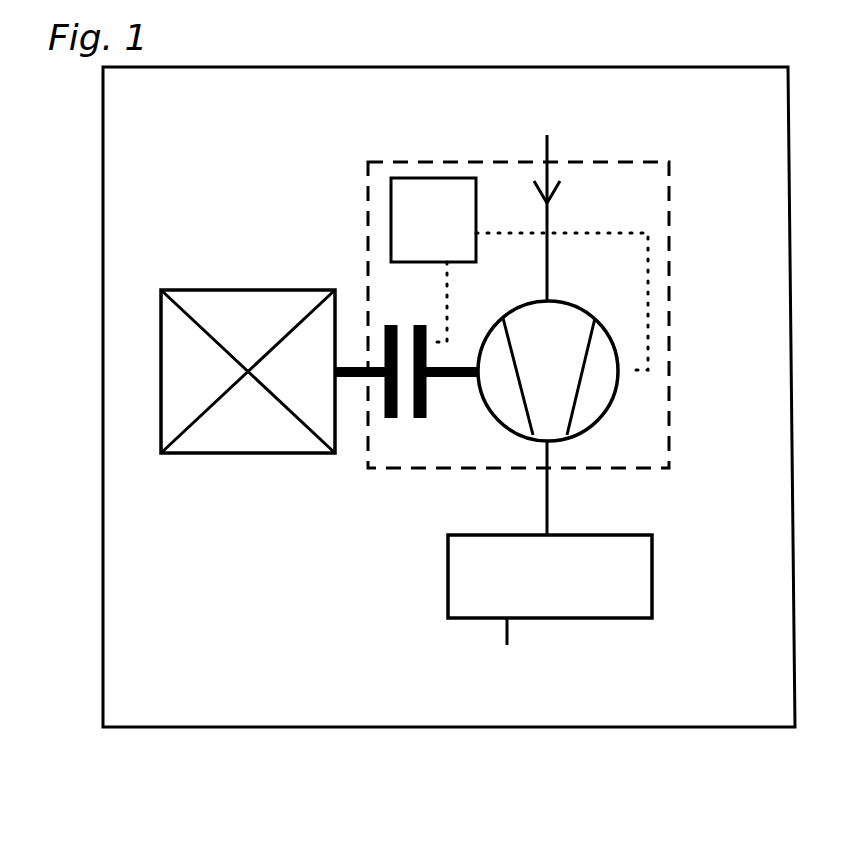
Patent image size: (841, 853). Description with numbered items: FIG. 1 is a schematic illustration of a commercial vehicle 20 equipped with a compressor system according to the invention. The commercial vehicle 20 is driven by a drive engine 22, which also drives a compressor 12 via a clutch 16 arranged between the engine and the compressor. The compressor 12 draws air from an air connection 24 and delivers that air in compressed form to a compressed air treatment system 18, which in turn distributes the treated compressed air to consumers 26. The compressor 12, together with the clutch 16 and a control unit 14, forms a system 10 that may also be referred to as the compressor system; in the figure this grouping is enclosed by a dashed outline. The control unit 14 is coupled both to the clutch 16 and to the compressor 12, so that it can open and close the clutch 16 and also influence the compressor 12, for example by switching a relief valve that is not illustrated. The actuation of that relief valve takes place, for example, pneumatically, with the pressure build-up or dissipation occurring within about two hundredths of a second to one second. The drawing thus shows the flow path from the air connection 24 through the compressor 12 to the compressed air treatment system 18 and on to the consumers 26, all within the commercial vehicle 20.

The system 10 is at (432, 469).
The compressor 12 is at (565, 366).
The control unit 14 is at (446, 249).
The clutch 16 is at (427, 404).
The compressed air treatment system 18 is at (557, 599).
The commercial vehicle 20 is at (362, 727).
The drive engine 22 is at (243, 456).
The air connection 24 is at (547, 197).
The consumers 26 is at (500, 657).